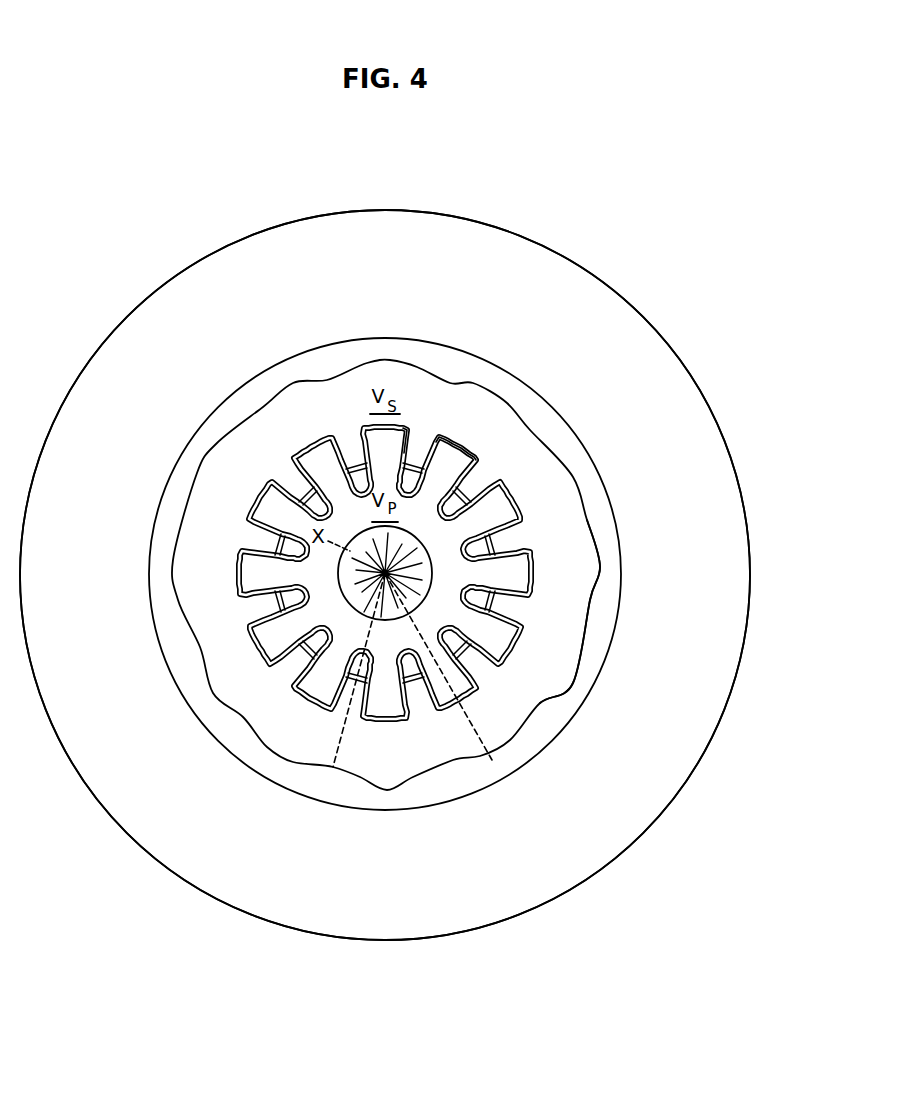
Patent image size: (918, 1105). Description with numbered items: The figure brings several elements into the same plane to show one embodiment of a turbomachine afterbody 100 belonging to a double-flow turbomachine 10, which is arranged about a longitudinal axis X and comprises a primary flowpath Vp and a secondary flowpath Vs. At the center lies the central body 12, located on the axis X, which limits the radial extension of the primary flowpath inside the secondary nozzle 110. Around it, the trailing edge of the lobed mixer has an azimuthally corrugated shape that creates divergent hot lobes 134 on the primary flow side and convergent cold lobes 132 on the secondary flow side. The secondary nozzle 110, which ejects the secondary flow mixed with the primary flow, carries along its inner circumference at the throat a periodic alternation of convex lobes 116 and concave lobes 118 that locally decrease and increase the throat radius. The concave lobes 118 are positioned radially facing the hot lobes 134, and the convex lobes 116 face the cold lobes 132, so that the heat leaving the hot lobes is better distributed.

The turbomachine afterbody 100 is at (176, 178).
The double-flow turbomachine 10 is at (480, 268).
The secondary nozzle 110 is at (540, 420).
The hot lobe 134 is at (460, 443).
The convex lobe 116 is at (582, 628).
The concave lobe 118 is at (573, 683).
The cold lobe 132 is at (440, 523).
The central body 12 is at (358, 592).